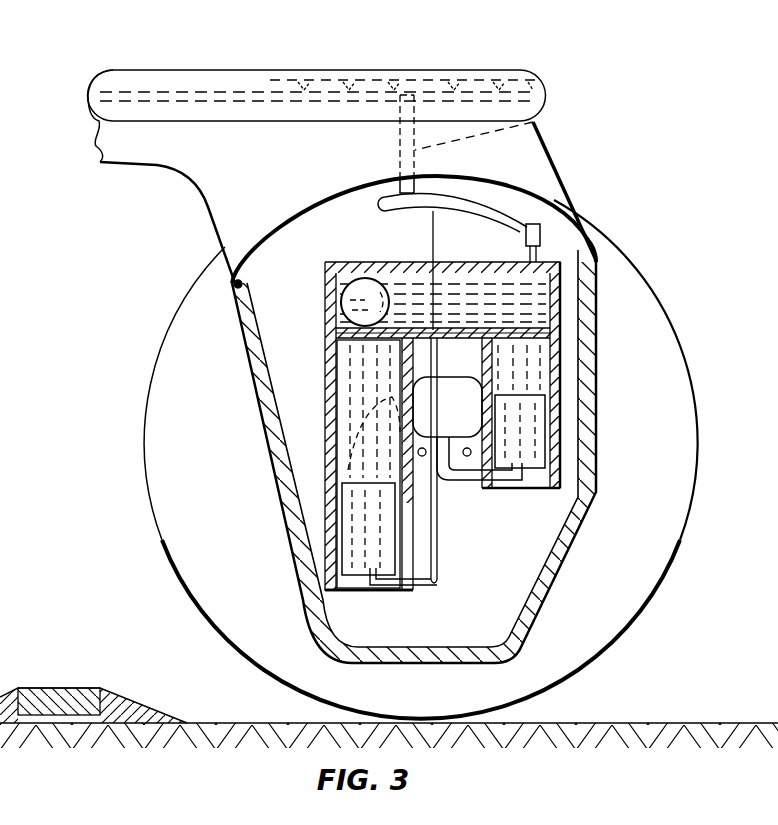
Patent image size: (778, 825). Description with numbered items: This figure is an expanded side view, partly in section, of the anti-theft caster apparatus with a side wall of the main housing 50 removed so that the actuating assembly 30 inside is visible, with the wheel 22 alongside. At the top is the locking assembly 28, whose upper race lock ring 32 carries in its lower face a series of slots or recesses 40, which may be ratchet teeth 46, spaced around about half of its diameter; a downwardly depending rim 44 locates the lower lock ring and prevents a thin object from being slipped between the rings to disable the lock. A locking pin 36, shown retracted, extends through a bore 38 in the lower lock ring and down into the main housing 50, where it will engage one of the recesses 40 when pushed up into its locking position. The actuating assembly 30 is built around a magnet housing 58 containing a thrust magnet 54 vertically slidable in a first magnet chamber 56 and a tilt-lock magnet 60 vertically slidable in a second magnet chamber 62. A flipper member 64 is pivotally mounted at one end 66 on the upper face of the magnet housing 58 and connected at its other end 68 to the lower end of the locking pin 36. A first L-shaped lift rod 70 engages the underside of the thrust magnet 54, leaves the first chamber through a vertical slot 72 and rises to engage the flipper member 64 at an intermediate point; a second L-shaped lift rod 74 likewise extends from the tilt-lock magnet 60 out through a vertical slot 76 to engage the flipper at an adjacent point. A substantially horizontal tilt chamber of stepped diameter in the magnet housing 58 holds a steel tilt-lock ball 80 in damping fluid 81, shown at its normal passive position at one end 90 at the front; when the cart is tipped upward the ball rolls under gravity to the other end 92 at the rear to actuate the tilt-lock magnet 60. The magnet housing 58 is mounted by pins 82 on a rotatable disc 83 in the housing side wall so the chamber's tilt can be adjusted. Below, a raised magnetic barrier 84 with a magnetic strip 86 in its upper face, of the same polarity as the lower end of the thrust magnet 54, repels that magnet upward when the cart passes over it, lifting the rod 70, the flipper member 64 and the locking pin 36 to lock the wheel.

The wheel 22 is at (591, 668).
The locking assembly 28 is at (537, 72).
The actuating assembly 30 is at (563, 328).
The upper race lock ring 32 is at (170, 80).
The locking pin 36 is at (413, 187).
The bore 38 is at (540, 124).
The slots or recesses 40 is at (407, 80).
The rim 44 is at (90, 112).
The ratchet teeth 46 is at (470, 88).
The main housing 50 is at (597, 400).
The thrust magnet 54 is at (345, 548).
The first magnet chamber 56 is at (330, 438).
The magnet housing 58 is at (325, 378).
The tilt-lock magnet 60 is at (548, 437).
The second magnet chamber 62 is at (548, 365).
The flipper member 64 is at (508, 215).
The one end of flipper member 66 is at (534, 238).
The other end of flipper member 68 is at (387, 203).
The first L-shaped lift rod 70 is at (440, 562).
The vertical slot 72 is at (440, 588).
The second L-shaped lift rod 74 is at (432, 532).
The vertical slot 76 is at (548, 272).
The tilt-lock ball 80 is at (325, 303).
The damping fluid 81 is at (543, 307).
The pins 82 is at (395, 485).
The rotatable disc 83 is at (345, 462).
The raised magnetic barrier 84 is at (136, 704).
The magnetic strip 86 is at (70, 688).
The one end of tilt chamber 90 is at (363, 276).
The other end of tilt chamber 92 is at (549, 345).